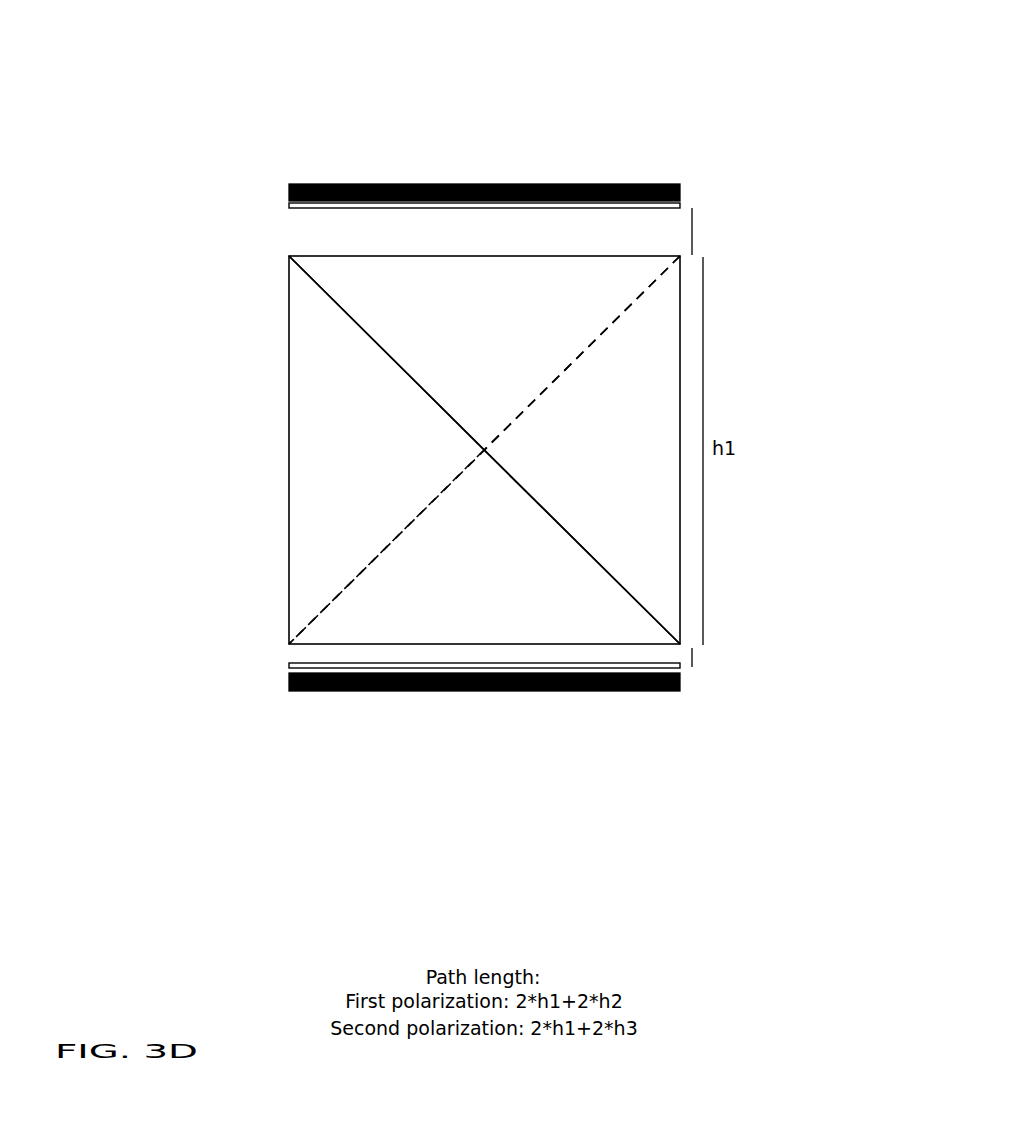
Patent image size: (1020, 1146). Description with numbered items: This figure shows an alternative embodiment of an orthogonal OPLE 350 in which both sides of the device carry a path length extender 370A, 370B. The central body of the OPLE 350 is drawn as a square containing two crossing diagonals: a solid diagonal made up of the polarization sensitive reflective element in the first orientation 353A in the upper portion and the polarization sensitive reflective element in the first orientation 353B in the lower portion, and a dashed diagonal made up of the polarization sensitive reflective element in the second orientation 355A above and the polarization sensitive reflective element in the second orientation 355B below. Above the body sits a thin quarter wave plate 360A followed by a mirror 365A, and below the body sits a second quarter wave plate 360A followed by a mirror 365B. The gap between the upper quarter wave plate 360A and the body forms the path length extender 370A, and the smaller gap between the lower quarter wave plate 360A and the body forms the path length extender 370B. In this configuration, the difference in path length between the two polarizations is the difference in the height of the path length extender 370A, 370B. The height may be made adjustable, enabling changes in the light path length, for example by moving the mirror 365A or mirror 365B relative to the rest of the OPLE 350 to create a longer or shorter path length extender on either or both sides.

The orthogonal OPLE 350 is at (257, 140).
The mirror 365A is at (275, 180).
The quarter wave plate 360A is at (273, 217).
The mirror 365B is at (267, 698).
The polarization sensitive reflective element (first orientation) 353A is at (370, 314).
The polarization sensitive reflective element (second orientation) 355A is at (599, 315).
The polarization sensitive reflective element (second orientation) 355B is at (387, 572).
The polarization sensitive reflective element (first orientation) 353B is at (597, 587).
The path length extender 370A is at (721, 233).
The path length extender 370B is at (727, 678).